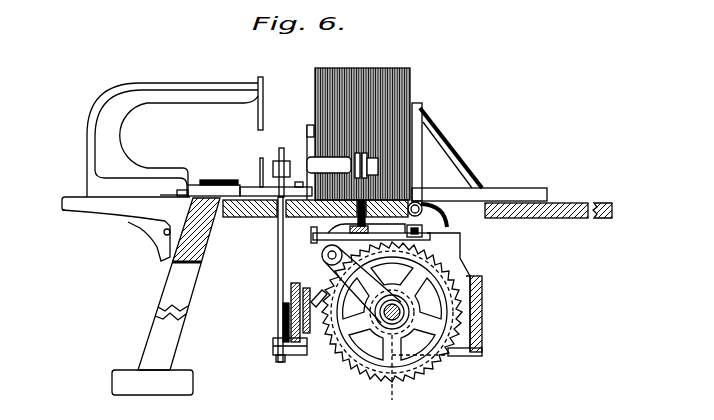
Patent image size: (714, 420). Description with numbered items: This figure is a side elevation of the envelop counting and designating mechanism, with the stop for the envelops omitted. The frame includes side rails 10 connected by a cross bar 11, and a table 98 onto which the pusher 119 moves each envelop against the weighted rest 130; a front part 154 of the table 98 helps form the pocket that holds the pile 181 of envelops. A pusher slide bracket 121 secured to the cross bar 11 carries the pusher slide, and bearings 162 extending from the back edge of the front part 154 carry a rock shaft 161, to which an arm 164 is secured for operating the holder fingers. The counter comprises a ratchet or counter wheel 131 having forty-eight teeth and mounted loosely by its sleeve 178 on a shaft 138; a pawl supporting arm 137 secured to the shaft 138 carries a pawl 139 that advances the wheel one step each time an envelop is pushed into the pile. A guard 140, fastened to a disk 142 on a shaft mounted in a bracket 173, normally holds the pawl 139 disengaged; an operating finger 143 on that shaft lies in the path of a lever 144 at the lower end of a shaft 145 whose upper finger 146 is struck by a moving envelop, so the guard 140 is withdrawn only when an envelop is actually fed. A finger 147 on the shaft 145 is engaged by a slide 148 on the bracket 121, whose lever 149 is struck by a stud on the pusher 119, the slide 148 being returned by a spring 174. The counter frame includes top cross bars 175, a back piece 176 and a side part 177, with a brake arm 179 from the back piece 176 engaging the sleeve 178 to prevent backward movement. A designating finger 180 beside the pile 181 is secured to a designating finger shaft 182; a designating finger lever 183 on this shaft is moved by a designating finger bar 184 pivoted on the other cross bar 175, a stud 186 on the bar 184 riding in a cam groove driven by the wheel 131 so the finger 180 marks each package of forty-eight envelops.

The side rails 10 is at (153, 335).
The cross bar 11 is at (203, 250).
The table 98 is at (548, 205).
The pusher 119 is at (220, 89).
The pusher slide bracket 121 is at (132, 218).
The weighted rest 130 is at (443, 147).
The ratchet or counter wheel 131 is at (347, 363).
The pawl supporting arm 137 is at (372, 314).
The shaft 138 is at (403, 305).
The pawl 139 is at (321, 293).
The guard 140 is at (286, 315).
The disk 142 is at (291, 294).
The operating finger 143 is at (273, 349).
The lever 144 is at (289, 358).
The shaft 145 is at (278, 258).
The finger 146 is at (282, 160).
The finger 147 is at (299, 182).
The slide 148 is at (248, 190).
The lever 149 is at (197, 183).
The front part 154 is at (249, 213).
The rock shaft 161 is at (419, 198).
The bearings 162 is at (434, 200).
The arm 164 is at (446, 212).
The bracket 173 is at (303, 305).
The spring 174 is at (217, 180).
The cross bars 175 is at (370, 281).
The back piece 176 is at (481, 308).
The side part 177 is at (456, 262).
The sleeve 178 is at (471, 293).
The brake arm 179 is at (464, 356).
The designating finger 180 is at (411, 88).
The pile 181 is at (384, 68).
The designating finger shaft 182 is at (408, 122).
The designating finger lever 183 is at (313, 236).
The designating finger bar 184 is at (420, 242).
The stud 186 is at (403, 300).